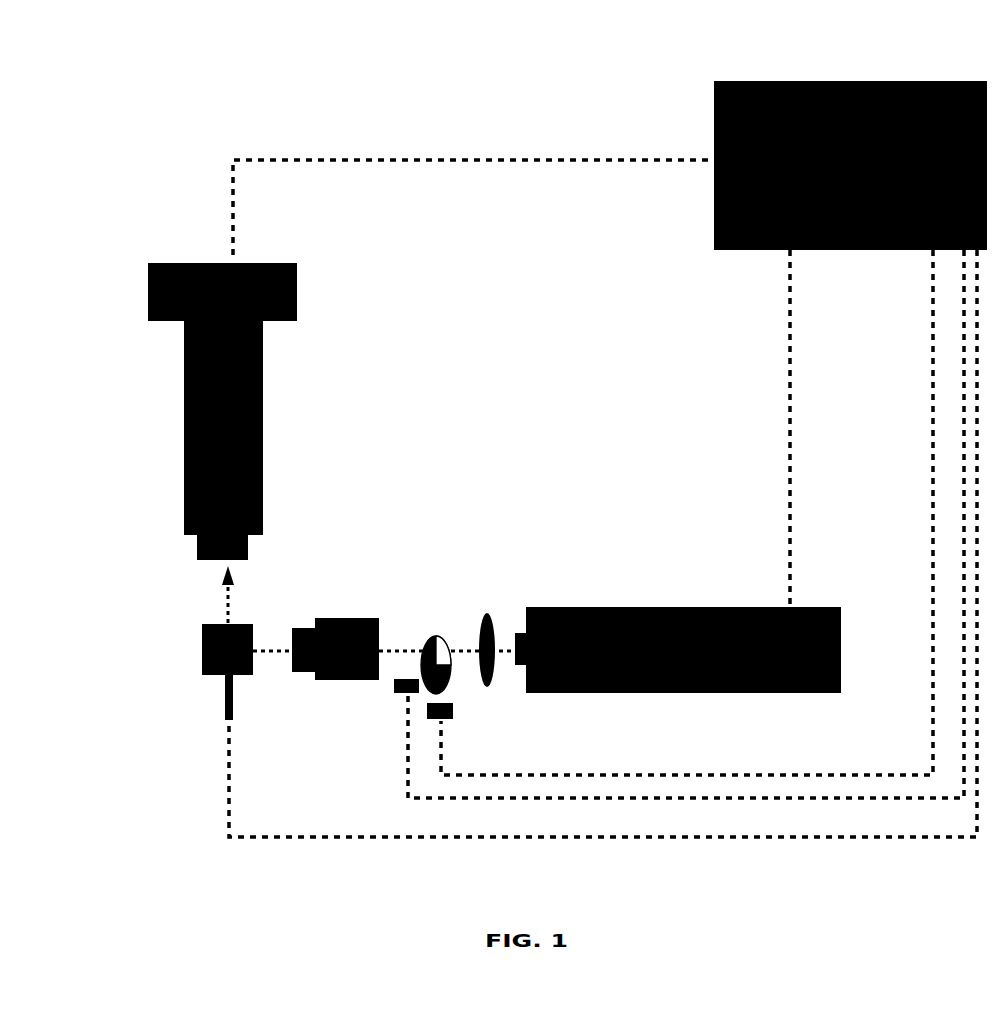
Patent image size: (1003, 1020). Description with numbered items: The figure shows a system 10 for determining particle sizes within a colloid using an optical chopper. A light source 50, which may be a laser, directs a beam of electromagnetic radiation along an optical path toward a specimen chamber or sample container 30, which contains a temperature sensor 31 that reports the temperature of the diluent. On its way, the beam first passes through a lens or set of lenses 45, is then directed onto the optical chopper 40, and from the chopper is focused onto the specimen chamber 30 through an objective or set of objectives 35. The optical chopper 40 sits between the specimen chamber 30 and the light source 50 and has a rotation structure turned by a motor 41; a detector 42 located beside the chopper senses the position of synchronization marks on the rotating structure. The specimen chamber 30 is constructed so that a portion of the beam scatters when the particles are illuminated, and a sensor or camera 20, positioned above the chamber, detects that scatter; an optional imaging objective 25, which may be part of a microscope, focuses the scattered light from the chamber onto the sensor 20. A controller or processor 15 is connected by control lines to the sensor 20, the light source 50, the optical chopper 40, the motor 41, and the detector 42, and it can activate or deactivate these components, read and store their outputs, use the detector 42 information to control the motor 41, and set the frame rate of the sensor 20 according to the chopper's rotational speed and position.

The system 10 is at (130, 130).
The controller or processor 15 is at (740, 128).
The sensor or camera 20 is at (168, 305).
The imaging objective 25 is at (184, 478).
The specimen chamber or sample container 30 is at (200, 653).
The temperature sensor 31 is at (224, 687).
The objective 35 is at (360, 618).
The optical chopper 40 is at (433, 642).
The motor 41 is at (453, 714).
The detector 42 is at (395, 693).
The lens or set of lenses 45 is at (490, 612).
The light source 50 is at (653, 607).